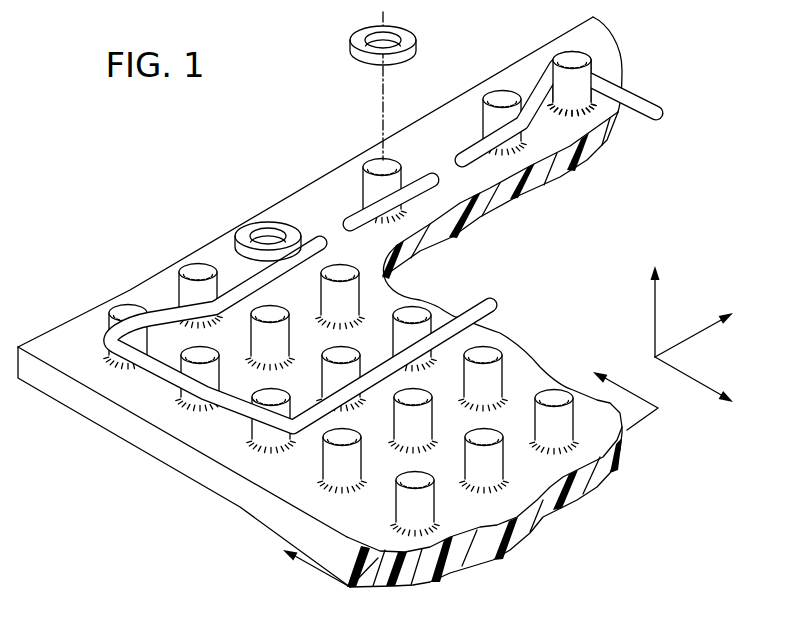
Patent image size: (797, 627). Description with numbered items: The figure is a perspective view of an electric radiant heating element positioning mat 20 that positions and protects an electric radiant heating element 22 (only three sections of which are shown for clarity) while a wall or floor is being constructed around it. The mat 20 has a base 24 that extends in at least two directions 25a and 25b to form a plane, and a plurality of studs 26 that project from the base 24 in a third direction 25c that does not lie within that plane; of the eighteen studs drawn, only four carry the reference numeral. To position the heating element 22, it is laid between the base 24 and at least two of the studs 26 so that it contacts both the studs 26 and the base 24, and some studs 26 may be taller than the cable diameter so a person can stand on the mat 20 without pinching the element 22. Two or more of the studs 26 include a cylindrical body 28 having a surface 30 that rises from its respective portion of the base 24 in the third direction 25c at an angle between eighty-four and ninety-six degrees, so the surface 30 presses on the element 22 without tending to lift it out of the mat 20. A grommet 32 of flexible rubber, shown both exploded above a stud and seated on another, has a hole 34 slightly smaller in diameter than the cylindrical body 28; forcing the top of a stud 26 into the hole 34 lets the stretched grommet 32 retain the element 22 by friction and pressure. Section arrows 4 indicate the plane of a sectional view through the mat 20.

The section line 4- 4 is at (478, 488).
The electric radiant heating element positioning mat 20 is at (315, 139).
The electric radiant heating element 22 is at (561, 158).
The base 24 is at (80, 357).
The studs 26 is at (562, 50).
The cylindrical body 28 is at (343, 471).
The surface 30 is at (326, 468).
The grommet 32 is at (350, 47).
The hole 34 is at (394, 38).
The first direction 25a is at (703, 332).
The second direction 25b is at (673, 370).
The third direction 25c is at (658, 309).